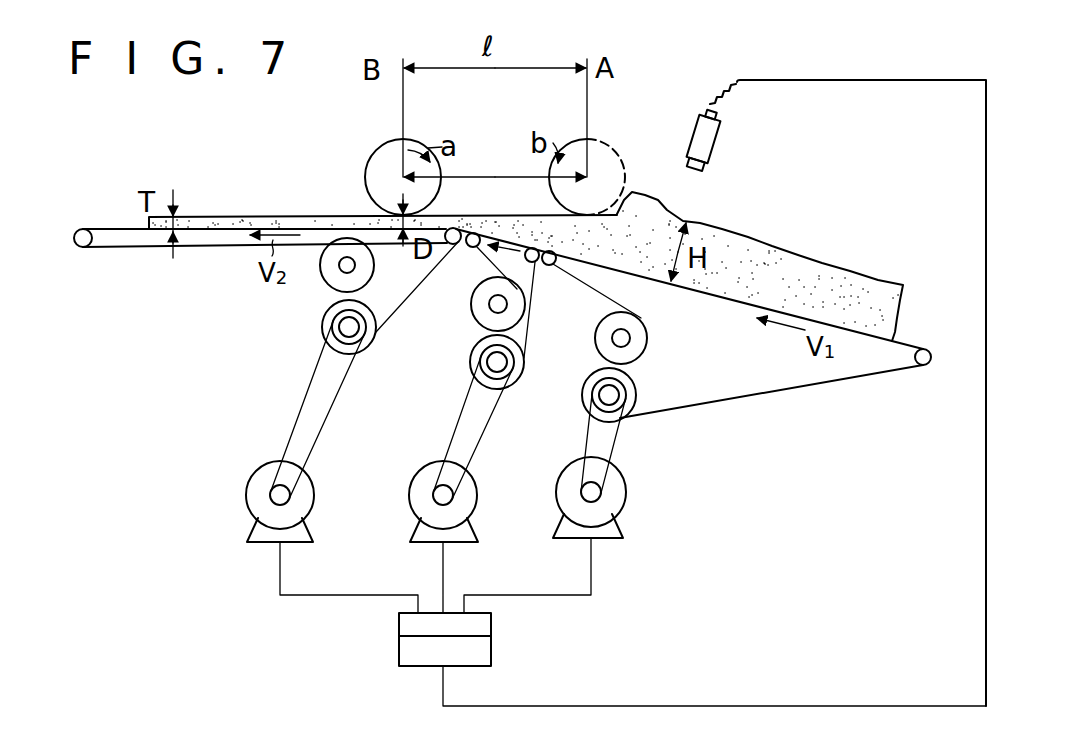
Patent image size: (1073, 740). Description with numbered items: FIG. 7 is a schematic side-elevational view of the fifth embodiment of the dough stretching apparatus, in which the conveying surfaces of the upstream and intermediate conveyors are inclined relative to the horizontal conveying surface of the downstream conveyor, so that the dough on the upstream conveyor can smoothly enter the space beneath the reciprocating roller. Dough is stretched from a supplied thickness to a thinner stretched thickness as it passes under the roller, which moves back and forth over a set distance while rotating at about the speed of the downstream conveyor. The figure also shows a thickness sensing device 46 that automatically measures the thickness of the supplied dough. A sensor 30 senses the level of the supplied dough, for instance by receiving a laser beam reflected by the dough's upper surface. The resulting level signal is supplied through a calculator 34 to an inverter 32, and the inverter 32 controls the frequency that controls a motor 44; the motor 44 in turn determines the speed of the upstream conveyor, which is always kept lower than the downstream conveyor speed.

The sensor 30 is at (697, 147).
The inverter 32 is at (491, 620).
The calculator 34 is at (491, 648).
The motor 44 is at (620, 498).
The thickness sensing device 46 is at (997, 299).